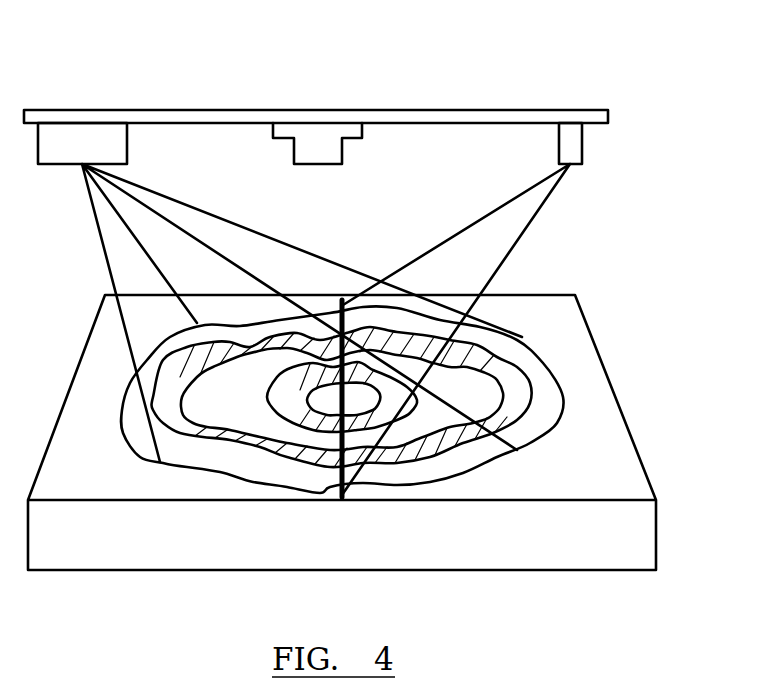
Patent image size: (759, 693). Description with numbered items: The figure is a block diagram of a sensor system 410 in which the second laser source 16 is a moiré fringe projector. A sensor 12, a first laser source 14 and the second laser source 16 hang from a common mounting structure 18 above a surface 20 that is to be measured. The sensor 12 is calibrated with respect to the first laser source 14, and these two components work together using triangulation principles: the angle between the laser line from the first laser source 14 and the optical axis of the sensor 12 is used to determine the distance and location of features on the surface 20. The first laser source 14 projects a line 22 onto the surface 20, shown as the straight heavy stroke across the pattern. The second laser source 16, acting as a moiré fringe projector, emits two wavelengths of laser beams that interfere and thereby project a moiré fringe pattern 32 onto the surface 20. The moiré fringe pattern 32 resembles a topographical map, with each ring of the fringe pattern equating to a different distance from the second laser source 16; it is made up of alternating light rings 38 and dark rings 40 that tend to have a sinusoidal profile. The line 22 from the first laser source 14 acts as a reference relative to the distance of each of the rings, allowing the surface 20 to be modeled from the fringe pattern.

The system 410 is at (670, 85).
The mounting structure 18 is at (207, 110).
The second laser source 16 is at (127, 141).
The sensor 12 is at (342, 147).
The first laser source 14 is at (582, 144).
The surface 20 is at (80, 417).
The line 22 is at (340, 471).
The moiré fringe pattern 32 is at (404, 371).
The light rings 38 is at (530, 362).
The dark rings 40 is at (528, 397).